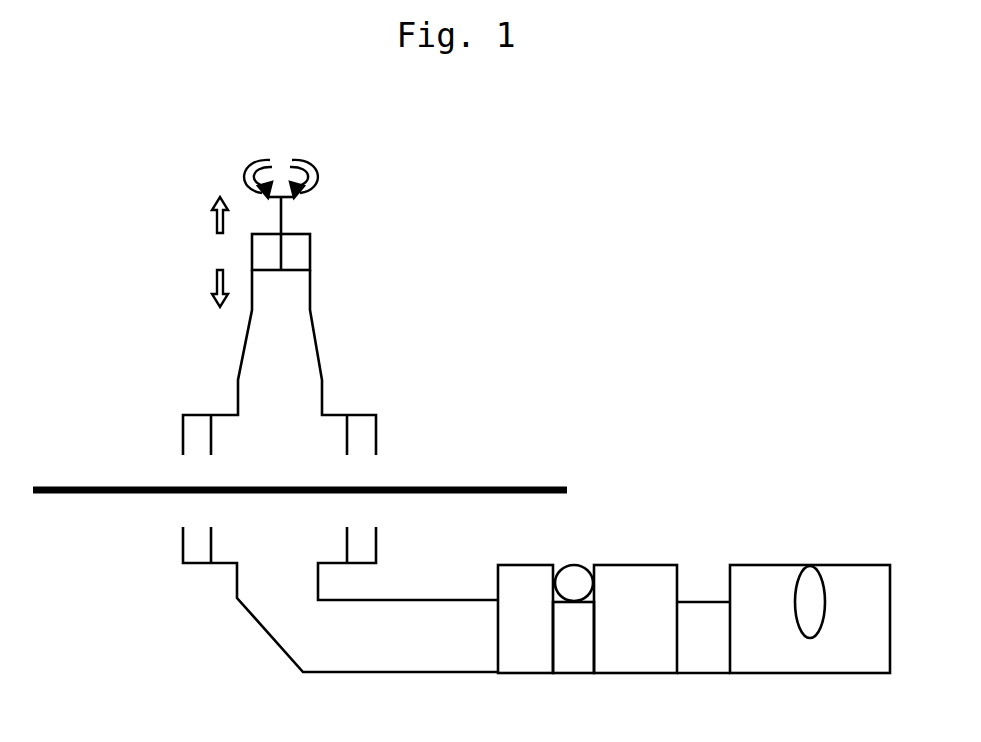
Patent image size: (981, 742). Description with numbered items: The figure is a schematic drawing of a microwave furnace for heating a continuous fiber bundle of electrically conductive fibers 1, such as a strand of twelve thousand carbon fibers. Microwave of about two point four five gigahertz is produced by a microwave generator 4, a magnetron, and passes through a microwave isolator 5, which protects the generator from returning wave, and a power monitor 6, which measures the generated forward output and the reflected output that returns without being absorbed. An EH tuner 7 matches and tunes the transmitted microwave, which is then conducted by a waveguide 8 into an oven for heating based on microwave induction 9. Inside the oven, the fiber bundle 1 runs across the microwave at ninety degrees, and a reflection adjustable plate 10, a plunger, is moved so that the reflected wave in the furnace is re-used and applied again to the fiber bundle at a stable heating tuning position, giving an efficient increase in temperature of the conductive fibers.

The continuous fiber bundle of electrically conductive fibers 1 is at (128, 488).
The microwave generator 4 is at (810, 603).
The microwave isolator 5 is at (635, 602).
The power monitor 6 is at (573, 603).
The EH tuner 7 is at (525, 602).
The waveguide 8 is at (431, 626).
The oven for heating based on microwave induction 9 is at (292, 466).
The reflection adjustable plate 10 is at (262, 271).